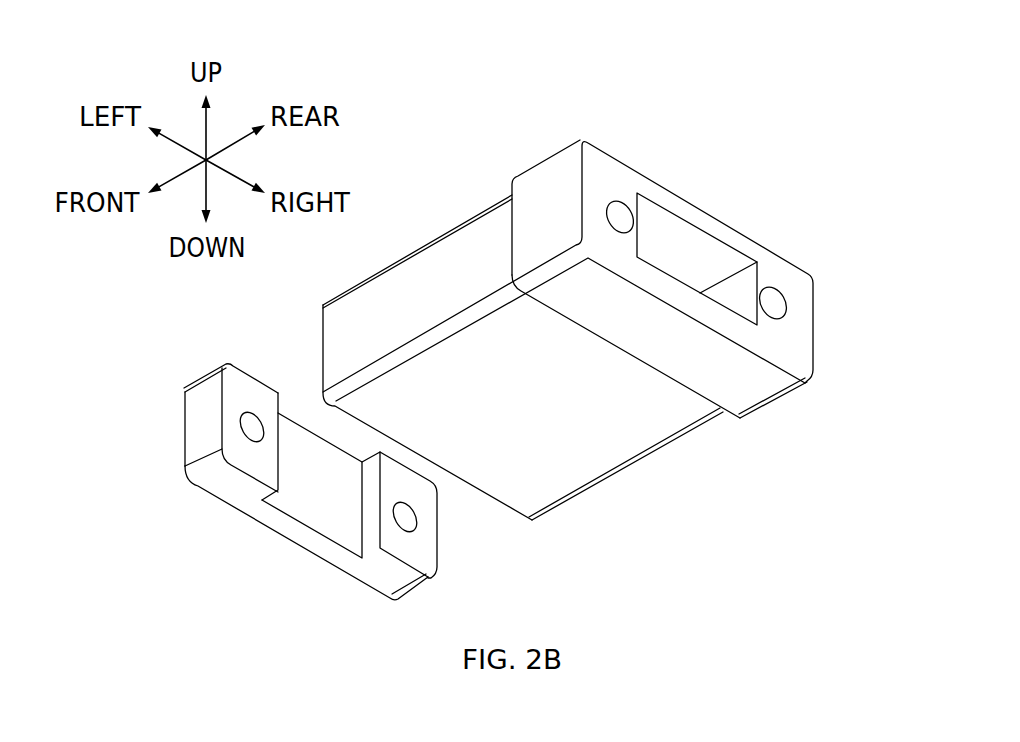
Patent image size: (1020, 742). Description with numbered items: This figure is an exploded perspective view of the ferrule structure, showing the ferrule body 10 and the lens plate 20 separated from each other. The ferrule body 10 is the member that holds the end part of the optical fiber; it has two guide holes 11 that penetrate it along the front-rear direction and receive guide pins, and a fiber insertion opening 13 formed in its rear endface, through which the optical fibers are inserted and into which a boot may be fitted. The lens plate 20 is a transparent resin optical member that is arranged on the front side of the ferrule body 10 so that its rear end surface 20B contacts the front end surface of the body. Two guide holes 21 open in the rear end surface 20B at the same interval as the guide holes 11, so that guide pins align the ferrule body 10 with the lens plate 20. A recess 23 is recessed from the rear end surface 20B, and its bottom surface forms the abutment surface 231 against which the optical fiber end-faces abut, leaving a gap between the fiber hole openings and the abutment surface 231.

The ferrule body 10 is at (447, 196).
The guide hole 11 is at (620, 214).
The fiber insertion opening 13 is at (699, 240).
The lens plate 20 is at (321, 461).
The rear end surface 20B is at (246, 458).
The guide hole 21 is at (248, 426).
The recess 23 is at (333, 525).
The abutment surface 231 is at (300, 507).